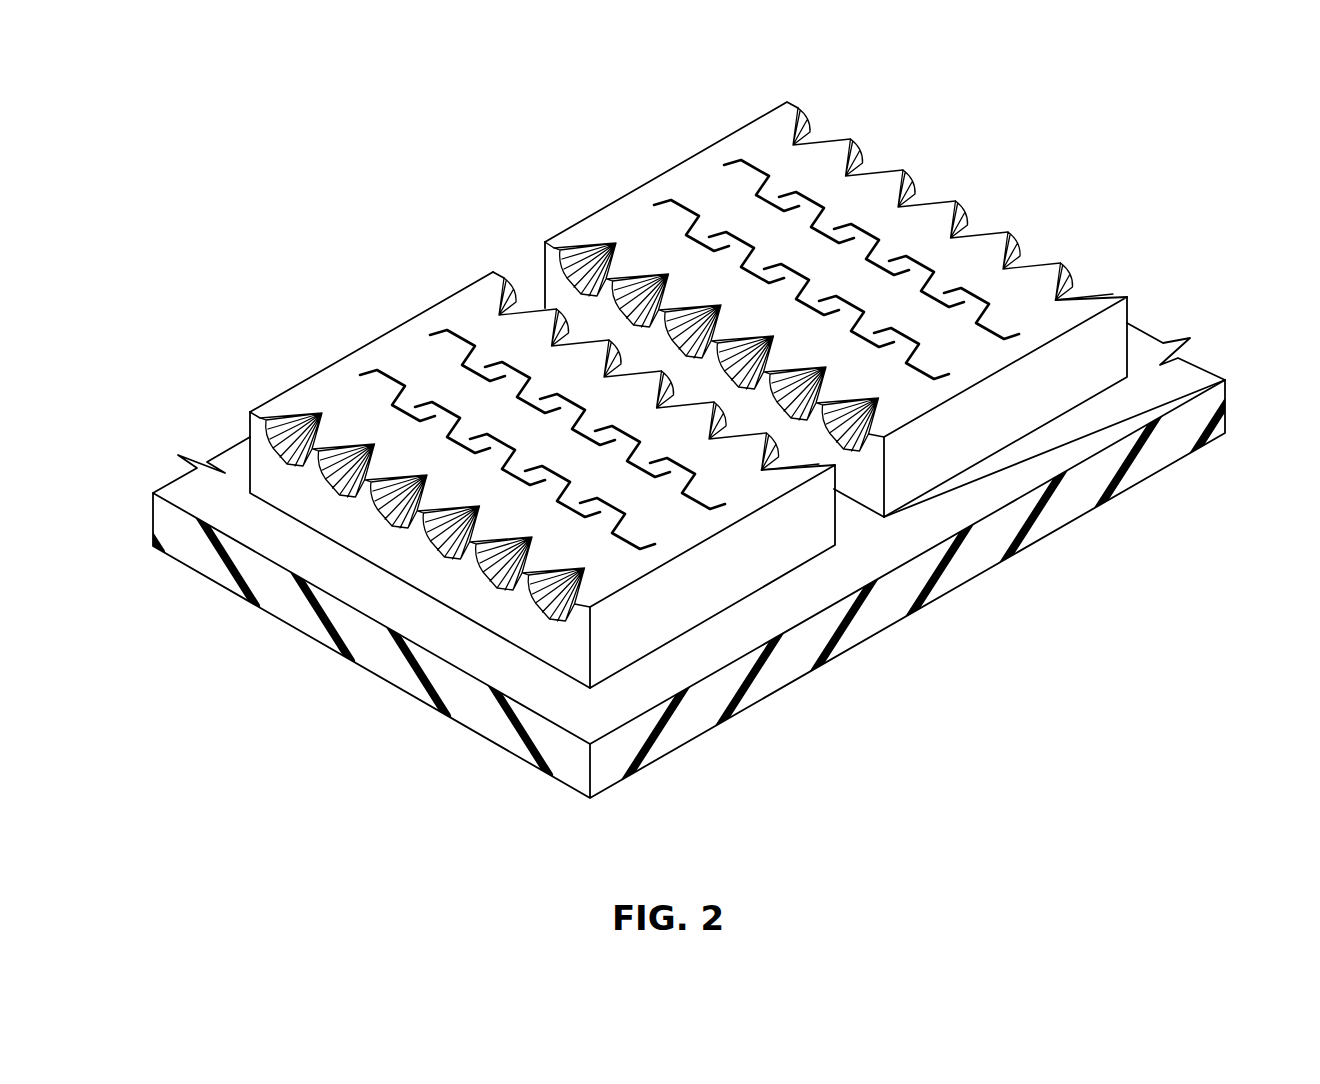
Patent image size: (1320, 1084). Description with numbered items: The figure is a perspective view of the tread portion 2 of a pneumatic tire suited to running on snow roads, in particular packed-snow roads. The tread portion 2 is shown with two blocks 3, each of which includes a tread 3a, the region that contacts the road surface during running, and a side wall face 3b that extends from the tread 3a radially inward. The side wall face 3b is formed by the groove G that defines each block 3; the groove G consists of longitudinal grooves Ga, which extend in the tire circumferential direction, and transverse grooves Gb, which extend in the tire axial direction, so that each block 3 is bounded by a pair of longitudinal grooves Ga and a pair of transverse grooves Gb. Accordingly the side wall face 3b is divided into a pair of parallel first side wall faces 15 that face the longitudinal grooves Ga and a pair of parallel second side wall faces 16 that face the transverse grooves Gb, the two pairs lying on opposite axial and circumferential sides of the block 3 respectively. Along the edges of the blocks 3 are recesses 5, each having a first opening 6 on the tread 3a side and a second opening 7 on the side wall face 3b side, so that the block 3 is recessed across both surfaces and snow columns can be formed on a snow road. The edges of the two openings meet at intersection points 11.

The tread portion 2 is at (1015, 165).
The block 3 is at (694, 180).
The tread 3a is at (678, 520).
The side wall face 3b is at (567, 643).
The recess 5 is at (344, 432).
The first opening 6 is at (540, 552).
The second opening 7 is at (507, 530).
The intersection point 11 is at (395, 500).
The first side wall face 15 is at (590, 215).
The second side wall face 16 is at (595, 315).
The groove G is at (853, 574).
The longitudinal groove Ga is at (1080, 430).
The transverse groove Gb is at (912, 147).